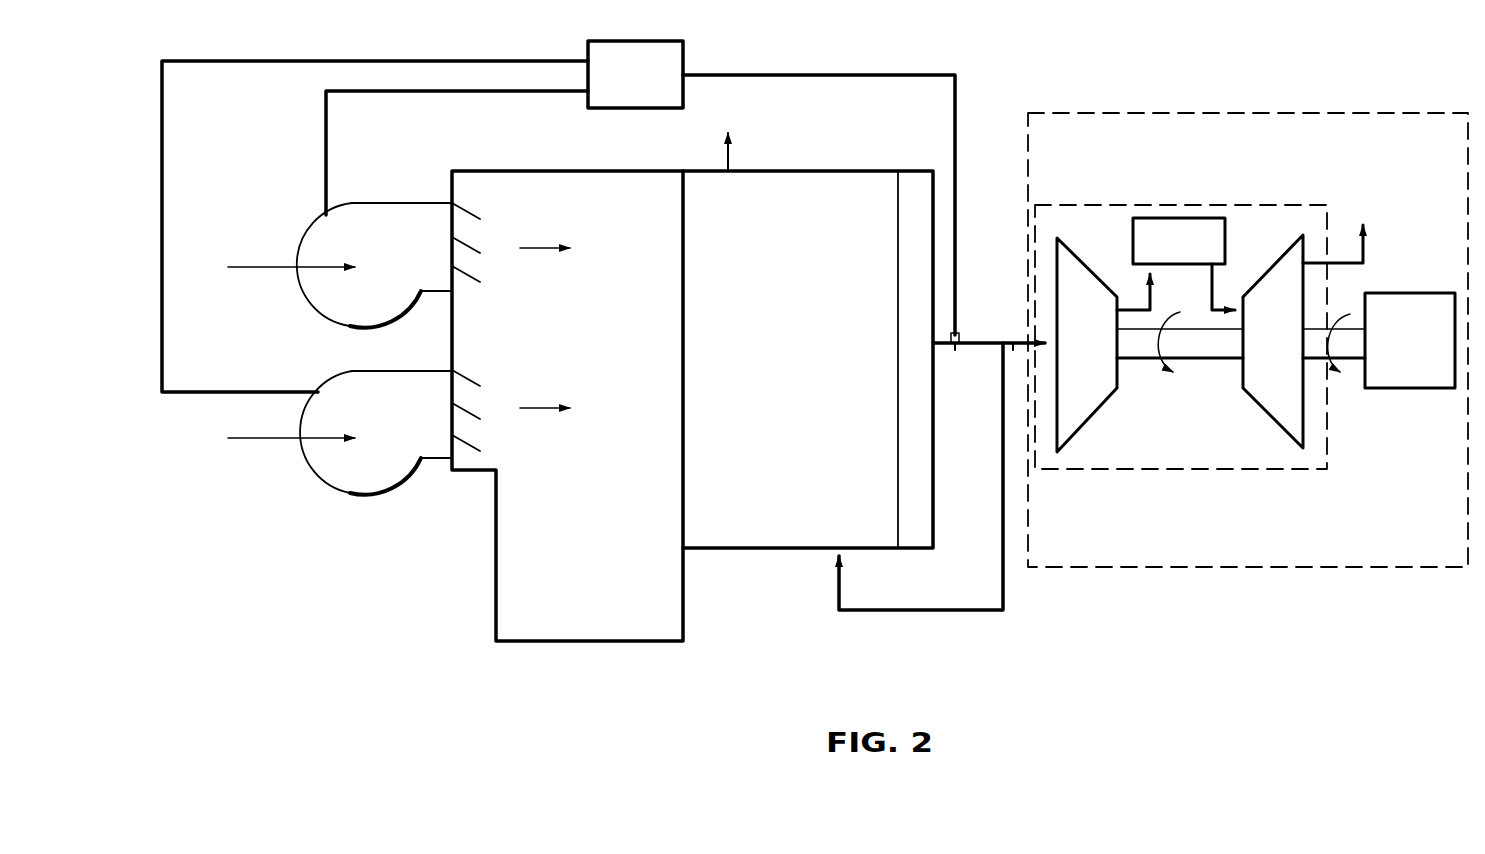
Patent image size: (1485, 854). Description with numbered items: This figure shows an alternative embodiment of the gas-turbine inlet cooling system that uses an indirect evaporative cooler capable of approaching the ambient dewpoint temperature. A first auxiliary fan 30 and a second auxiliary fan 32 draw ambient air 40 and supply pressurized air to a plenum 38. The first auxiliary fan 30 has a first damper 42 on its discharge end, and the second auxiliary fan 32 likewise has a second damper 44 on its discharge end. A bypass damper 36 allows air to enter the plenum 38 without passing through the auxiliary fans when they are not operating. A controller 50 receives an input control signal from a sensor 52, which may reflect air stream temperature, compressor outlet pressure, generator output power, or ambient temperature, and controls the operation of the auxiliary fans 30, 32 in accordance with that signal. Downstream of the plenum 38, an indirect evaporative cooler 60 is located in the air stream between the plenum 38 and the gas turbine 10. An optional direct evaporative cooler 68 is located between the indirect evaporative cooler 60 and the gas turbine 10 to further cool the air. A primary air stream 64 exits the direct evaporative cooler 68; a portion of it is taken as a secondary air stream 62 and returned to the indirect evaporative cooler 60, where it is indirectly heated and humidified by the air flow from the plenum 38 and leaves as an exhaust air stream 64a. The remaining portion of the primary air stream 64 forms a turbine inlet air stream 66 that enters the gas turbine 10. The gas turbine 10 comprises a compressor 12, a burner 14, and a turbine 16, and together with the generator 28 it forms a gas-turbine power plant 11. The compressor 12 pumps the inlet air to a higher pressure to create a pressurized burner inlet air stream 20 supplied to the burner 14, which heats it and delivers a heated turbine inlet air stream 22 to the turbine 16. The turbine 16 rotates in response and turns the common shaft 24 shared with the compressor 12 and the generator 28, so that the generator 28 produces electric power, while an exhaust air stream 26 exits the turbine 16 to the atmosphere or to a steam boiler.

The gas turbine 10 is at (1263, 205).
The gas-turbine power plant 11 is at (1308, 567).
The compressor 12 is at (1085, 411).
The burner 14 is at (1182, 218).
The turbine 16 is at (1272, 410).
The burner inlet air stream 20 is at (1136, 306).
The turbine inlet air stream 22 is at (1222, 296).
The shaft 24 is at (1135, 356).
The exhaust air stream 26 is at (1368, 250).
The generator 28 is at (1425, 360).
The first auxiliary fan 30 is at (383, 203).
The second auxiliary fan 32 is at (382, 482).
The bypass damper 36 is at (497, 560).
The plenum 38 is at (637, 349).
The ambient air 40 is at (270, 350).
The first damper 42 is at (467, 246).
The second damper 44 is at (478, 418).
The controller 50 is at (651, 89).
The sensor 52 is at (957, 350).
The indirect evaporative cooler 60 is at (815, 347).
The secondary air stream 62 is at (953, 612).
The primary air stream 64 is at (970, 340).
The exhaust air stream 64a is at (728, 155).
The turbine inlet air stream 66 is at (1015, 342).
The direct evaporative cooler 68 is at (914, 180).